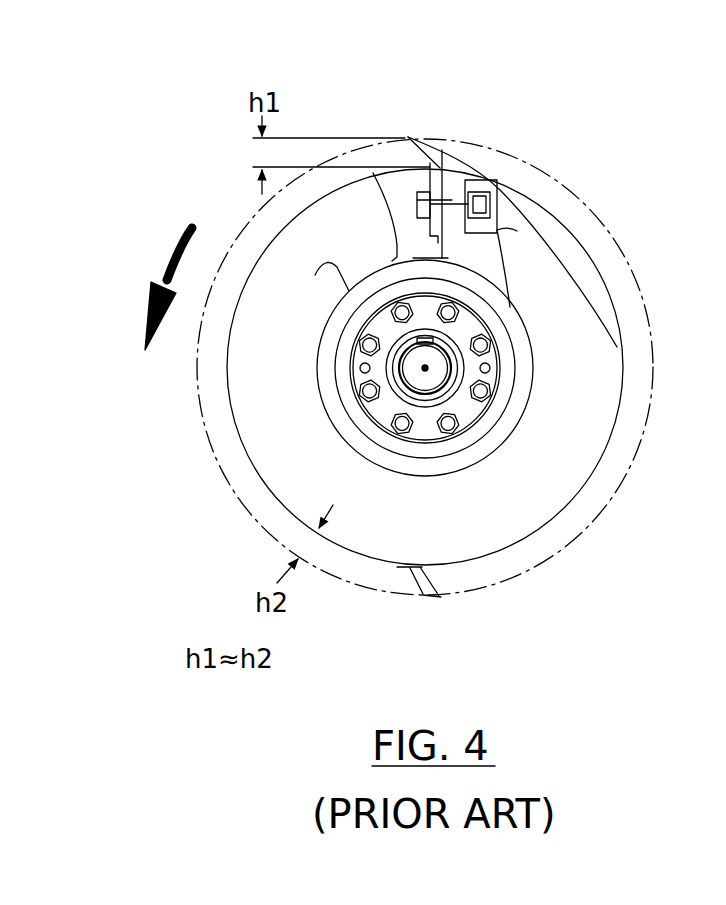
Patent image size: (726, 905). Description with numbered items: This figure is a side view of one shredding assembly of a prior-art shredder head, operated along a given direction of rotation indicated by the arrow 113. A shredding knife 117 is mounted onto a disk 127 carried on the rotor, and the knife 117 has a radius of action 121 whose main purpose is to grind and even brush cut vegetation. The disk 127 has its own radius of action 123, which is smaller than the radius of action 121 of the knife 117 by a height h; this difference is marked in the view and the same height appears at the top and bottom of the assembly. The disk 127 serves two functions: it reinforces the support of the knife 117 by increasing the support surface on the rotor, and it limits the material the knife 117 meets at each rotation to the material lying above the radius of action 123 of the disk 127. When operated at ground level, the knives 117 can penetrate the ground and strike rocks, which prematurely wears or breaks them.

The rotation direction arrow 113 is at (165, 272).
The shredding knife 117 is at (440, 142).
The radius of action of the knife 121 is at (425, 368).
The radius of action of the disk 123 is at (309, 210).
The disk 127 is at (275, 438).